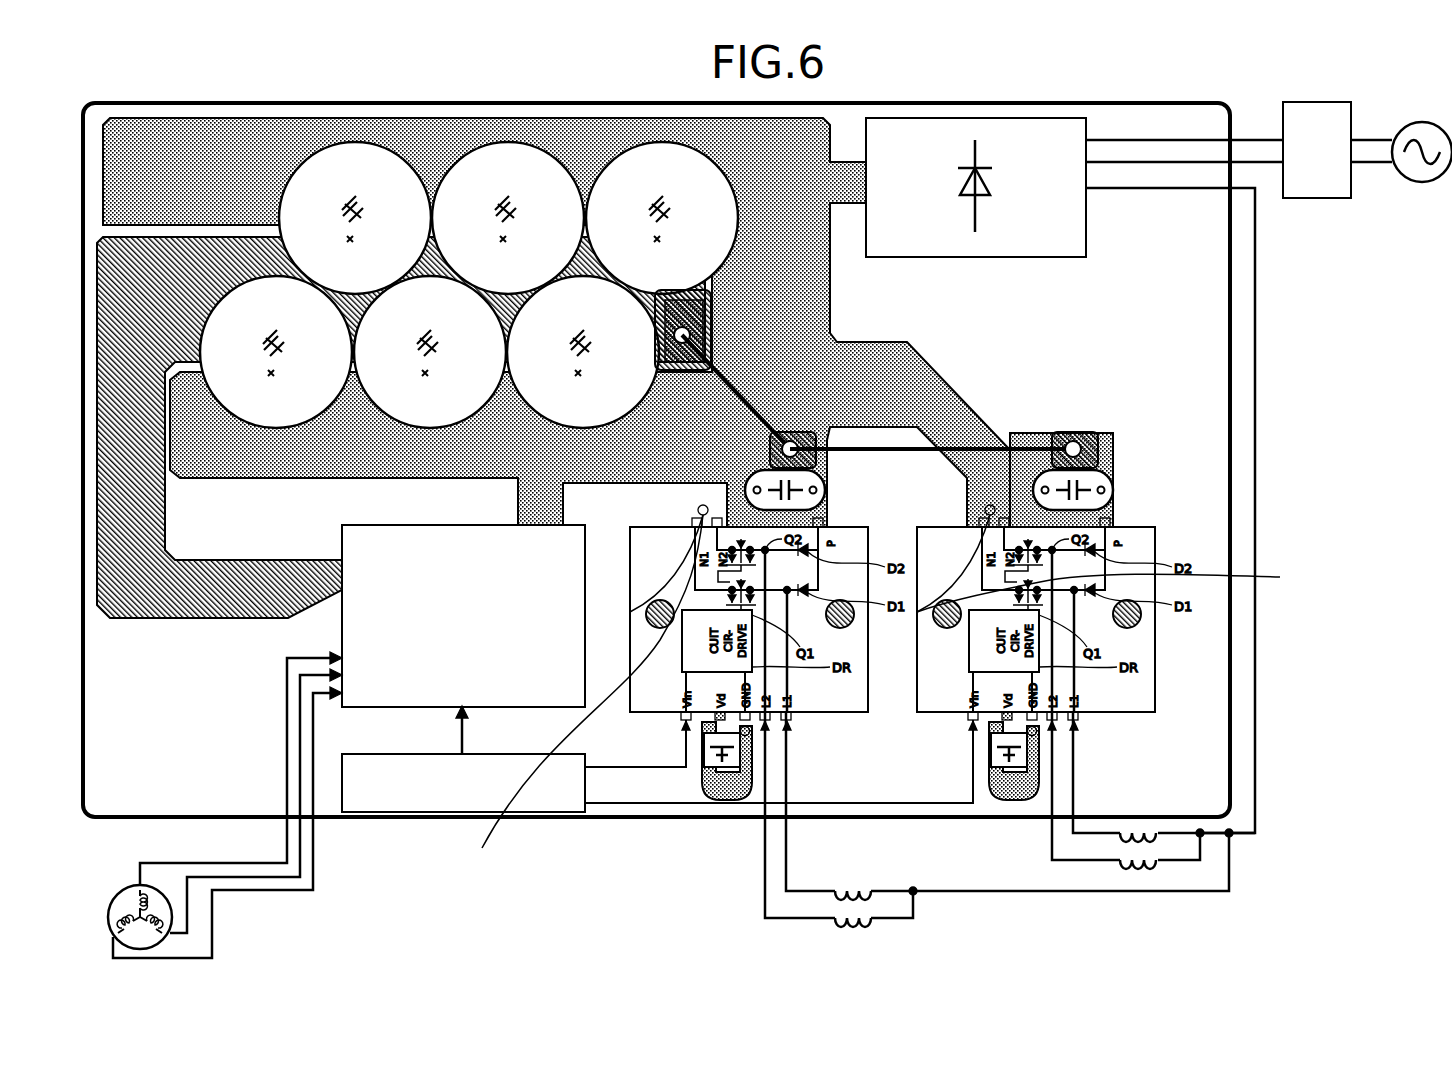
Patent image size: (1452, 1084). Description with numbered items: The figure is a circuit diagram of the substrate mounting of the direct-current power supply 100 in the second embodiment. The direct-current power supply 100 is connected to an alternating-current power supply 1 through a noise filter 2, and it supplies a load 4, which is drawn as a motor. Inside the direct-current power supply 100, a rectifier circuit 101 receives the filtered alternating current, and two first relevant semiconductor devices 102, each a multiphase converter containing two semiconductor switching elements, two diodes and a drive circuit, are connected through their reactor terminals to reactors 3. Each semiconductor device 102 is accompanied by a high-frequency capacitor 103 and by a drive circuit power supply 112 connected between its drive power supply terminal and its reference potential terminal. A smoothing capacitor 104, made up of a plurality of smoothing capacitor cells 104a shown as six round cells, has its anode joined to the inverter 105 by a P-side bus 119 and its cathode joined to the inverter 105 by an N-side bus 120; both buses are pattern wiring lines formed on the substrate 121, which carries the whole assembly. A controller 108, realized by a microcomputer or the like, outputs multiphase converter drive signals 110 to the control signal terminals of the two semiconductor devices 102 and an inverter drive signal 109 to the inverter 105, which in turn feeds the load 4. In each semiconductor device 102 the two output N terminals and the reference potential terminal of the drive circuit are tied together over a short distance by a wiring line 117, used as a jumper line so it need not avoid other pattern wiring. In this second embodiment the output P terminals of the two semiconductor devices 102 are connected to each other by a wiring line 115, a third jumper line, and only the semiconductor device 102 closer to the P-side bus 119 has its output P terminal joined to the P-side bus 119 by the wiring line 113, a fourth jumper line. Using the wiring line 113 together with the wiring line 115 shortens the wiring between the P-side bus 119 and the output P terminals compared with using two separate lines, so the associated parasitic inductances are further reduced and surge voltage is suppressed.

The direct-current power supply 100 is at (216, 94).
The alternating-current power supply 1 is at (1420, 122).
The noise filter 2 is at (1310, 102).
The reactors 3 is at (832, 896).
The load 4 is at (122, 890).
The rectifier circuit 101 is at (1068, 258).
The first relevant semiconductor device 102 is at (642, 527).
The high-frequency capacitors 103 is at (756, 478).
The smoothing capacitor 104 is at (469, 233).
The smoothing capacitor cells 104a is at (652, 72).
The inverter 105 is at (359, 525).
The controller 108 is at (548, 812).
The inverter drive signal 109 is at (460, 730).
The multiphase converter drive signals 110 is at (614, 767).
The drive circuit power supplies 112 is at (702, 784).
The wiring line 113 is at (740, 408).
The wiring line 115 is at (864, 456).
The wiring line 117 is at (888, 689).
The P-side bus 119 is at (196, 560).
The N-side bus 120 is at (864, 342).
The substrate 121 is at (1258, 372).